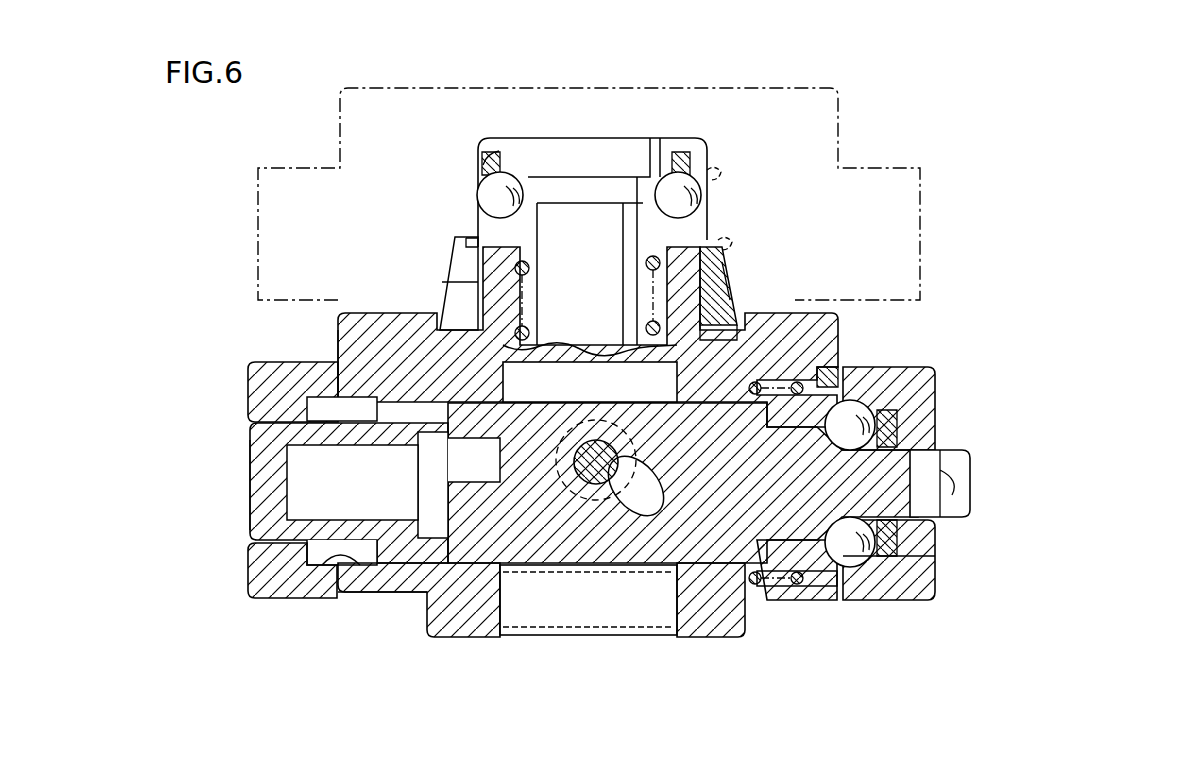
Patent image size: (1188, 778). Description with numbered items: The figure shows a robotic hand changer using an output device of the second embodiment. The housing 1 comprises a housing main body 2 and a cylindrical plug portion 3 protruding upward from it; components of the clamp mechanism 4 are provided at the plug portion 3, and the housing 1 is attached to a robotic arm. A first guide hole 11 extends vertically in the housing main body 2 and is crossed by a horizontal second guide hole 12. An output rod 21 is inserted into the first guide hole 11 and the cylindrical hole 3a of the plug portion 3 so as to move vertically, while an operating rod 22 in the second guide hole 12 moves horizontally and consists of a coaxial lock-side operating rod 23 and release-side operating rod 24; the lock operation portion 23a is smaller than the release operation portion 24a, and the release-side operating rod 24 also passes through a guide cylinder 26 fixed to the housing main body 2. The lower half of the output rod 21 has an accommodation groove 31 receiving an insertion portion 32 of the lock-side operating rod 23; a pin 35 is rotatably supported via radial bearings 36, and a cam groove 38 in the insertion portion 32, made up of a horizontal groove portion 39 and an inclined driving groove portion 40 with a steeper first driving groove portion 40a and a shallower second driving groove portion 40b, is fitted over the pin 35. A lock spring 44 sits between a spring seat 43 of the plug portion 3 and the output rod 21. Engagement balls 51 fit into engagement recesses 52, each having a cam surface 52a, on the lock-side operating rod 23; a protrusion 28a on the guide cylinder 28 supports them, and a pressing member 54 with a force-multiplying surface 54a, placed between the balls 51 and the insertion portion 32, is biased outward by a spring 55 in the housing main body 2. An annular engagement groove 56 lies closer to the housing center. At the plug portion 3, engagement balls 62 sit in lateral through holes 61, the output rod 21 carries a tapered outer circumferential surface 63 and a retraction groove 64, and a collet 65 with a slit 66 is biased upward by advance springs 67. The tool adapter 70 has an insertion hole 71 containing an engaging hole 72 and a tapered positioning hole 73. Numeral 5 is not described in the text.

The housing 1 is at (330, 320).
The housing main body 2 is at (338, 342).
The plug portion 3 is at (705, 160).
The cylindrical hole 3a is at (500, 306).
The clamp mechanism 4 is at (752, 204).
The seal plate 5 is at (822, 590).
The first guide hole 11 is at (503, 598).
The second guide hole 12 is at (330, 593).
The output rod 21 is at (497, 378).
The operating rod 22 is at (626, 485).
The lock-side operating rod 23 is at (982, 510).
The lock operation portion 23a is at (972, 468).
The release-side operating rod 24 is at (240, 520).
The release operation portion 24a is at (250, 486).
The guide cylinder 26 is at (250, 392).
The guide cylinder 28 is at (945, 371).
The protrusion 28a is at (883, 557).
The accommodation groove 31 is at (370, 408).
The insertion portion 32 is at (593, 550).
The pin 35 is at (458, 636).
The radial bearings 36 is at (445, 590).
The cam groove 38 is at (492, 472).
The horizontal groove portion 39 is at (330, 525).
The driving groove portion 40 is at (663, 472).
The first driving groove portion 40a is at (617, 520).
The second driving groove portion 40b is at (684, 520).
The spring seat 43 is at (535, 243).
The lock spring 44 is at (530, 270).
The engagement balls 51 is at (845, 552).
The engagement recesses 52 is at (935, 517).
The cam surface 52a is at (935, 577).
The pressing member 54 is at (837, 362).
The force-multiplying surface 54a is at (880, 402).
The spring 55 is at (777, 590).
The annular engagement groove 56 is at (872, 428).
The lateral through holes 61 is at (487, 187).
The engagement ball 62 is at (490, 195).
The tapered outer circumferential surface 63 is at (495, 162).
The retraction groove 64 is at (505, 165).
The collet 65 is at (740, 276).
The slit 66 is at (455, 270).
The advance springs 67 is at (740, 310).
The tool adapter 70 is at (846, 104).
The insertion hole 71 is at (722, 283).
The engaging hole 72 is at (722, 175).
The tapered positioning hole 73 is at (727, 243).